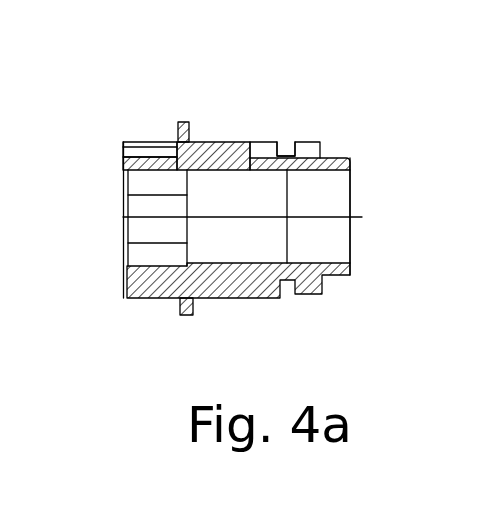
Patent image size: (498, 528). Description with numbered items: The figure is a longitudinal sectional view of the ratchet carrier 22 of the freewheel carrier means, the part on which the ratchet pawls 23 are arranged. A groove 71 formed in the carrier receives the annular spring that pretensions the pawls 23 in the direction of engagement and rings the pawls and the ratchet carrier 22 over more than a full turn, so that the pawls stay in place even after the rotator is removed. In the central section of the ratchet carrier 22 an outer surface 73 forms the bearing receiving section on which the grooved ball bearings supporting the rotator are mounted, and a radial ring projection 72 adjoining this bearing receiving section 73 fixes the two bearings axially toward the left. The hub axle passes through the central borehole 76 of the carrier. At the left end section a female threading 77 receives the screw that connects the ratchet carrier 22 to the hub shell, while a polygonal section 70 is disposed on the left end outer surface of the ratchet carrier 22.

The ratchet carrier 22 is at (225, 141).
The polygonal section 70 is at (141, 141).
The radial ring projection 72 is at (184, 121).
The outer surface 73 is at (227, 298).
The ratchet pawls 23 is at (307, 141).
The groove 71 is at (289, 141).
The central borehole 76 is at (351, 172).
The female threading 77 is at (150, 175).